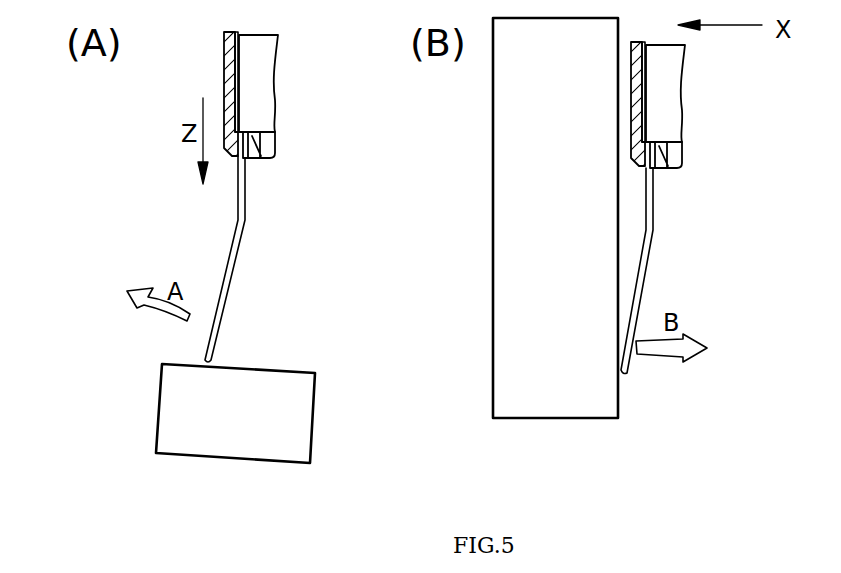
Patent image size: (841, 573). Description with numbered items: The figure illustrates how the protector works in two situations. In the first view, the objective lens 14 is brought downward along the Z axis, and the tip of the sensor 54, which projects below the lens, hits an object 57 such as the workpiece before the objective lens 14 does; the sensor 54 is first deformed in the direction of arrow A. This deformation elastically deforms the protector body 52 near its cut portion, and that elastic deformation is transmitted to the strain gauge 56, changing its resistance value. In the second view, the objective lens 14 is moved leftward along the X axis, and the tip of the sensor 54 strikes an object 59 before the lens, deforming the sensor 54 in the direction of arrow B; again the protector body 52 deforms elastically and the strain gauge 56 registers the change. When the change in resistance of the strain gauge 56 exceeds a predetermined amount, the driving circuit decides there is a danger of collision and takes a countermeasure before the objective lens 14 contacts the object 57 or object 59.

The objective lens 14 is at (263, 102).
The protector body 52 is at (227, 88).
The sensor 54 is at (222, 303).
The strain gauge 56 is at (237, 53).
The object 57 is at (302, 370).
The object 59 is at (503, 106).